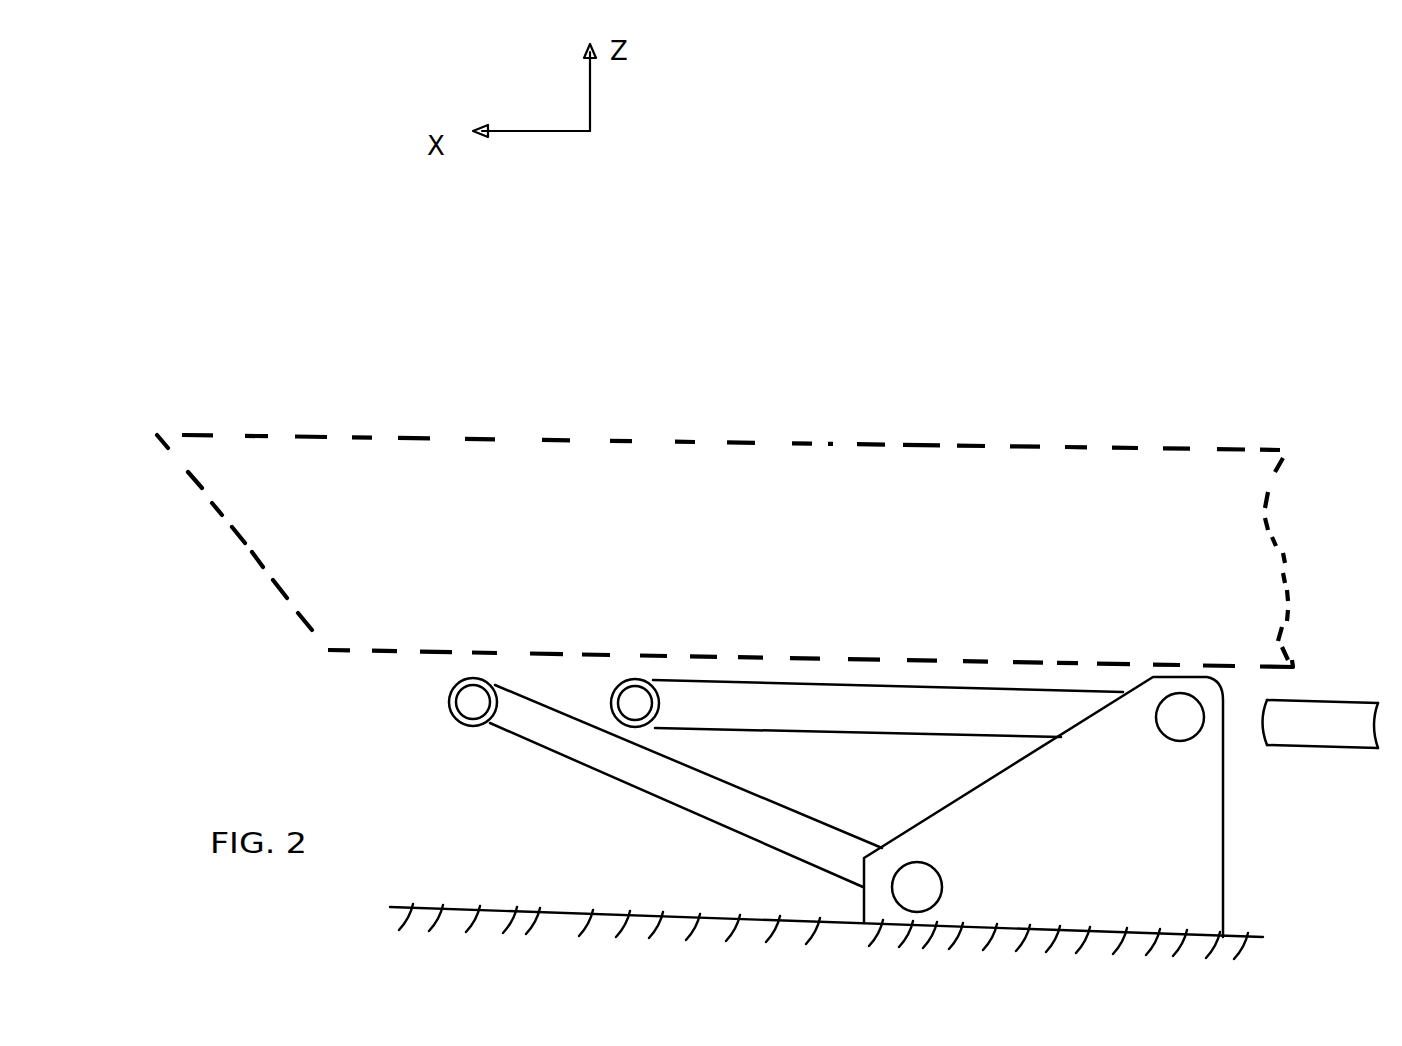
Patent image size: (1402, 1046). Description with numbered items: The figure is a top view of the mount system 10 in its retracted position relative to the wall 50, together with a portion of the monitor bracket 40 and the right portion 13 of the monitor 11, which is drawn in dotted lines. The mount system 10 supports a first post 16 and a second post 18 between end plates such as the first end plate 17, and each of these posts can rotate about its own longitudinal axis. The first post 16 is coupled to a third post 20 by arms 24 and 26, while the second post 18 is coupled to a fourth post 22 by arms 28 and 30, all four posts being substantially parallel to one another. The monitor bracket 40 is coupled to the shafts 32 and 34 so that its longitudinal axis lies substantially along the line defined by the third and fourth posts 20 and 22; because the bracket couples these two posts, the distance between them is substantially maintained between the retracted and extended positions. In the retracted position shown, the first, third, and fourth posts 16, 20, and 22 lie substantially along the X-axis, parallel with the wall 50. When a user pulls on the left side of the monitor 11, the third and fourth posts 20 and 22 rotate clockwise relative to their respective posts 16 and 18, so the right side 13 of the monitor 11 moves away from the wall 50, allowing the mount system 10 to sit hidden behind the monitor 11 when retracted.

The mount system 10 is at (582, 825).
The monitor 11 is at (678, 515).
The right side of the monitor 13 is at (218, 510).
The first post 16 is at (1175, 727).
The first end plate 17 is at (1138, 868).
The second post 18 is at (927, 887).
The third post 20 is at (862, 665).
The fourth post 22 is at (470, 727).
The arm 24 is at (888, 668).
The arm 26 is at (862, 700).
The arm 28 is at (686, 786).
The arm 30 is at (753, 807).
The shaft 32 is at (630, 705).
The shaft 34 is at (463, 692).
The monitor bracket 40 is at (1318, 733).
The wall 50 is at (460, 918).